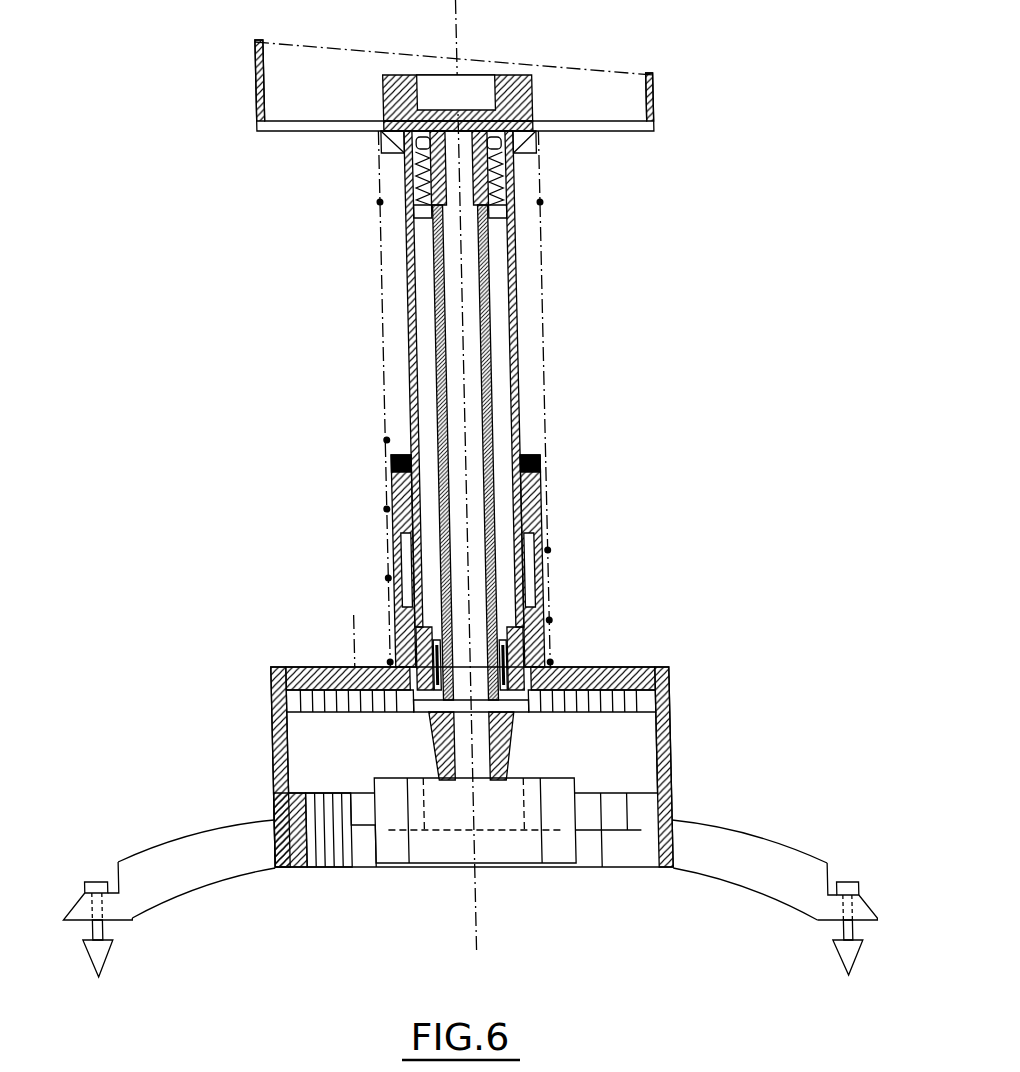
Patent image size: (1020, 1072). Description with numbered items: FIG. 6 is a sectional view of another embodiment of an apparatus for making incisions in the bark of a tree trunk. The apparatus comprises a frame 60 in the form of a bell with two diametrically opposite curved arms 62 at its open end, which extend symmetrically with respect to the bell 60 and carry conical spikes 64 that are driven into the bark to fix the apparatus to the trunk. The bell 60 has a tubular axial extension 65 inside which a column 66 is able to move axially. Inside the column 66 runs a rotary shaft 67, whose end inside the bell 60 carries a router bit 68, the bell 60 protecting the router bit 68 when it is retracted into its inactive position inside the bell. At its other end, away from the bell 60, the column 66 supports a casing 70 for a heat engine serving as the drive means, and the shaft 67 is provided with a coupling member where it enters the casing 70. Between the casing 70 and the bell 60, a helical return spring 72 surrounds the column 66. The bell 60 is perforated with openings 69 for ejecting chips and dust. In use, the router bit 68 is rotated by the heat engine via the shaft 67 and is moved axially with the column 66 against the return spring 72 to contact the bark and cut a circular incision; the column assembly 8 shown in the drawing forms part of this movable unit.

The column 8 is at (532, 588).
The frame 60 is at (612, 650).
The curved arms 62 is at (717, 807).
The conical spikes 64 is at (82, 942).
The tubular axial extension 65 is at (534, 487).
The column 66 is at (512, 263).
The rotary shaft 67 is at (486, 313).
The router bit 68 is at (366, 850).
The openings 69 is at (283, 728).
The casing 70 is at (652, 83).
The helical return spring 72 is at (523, 84).